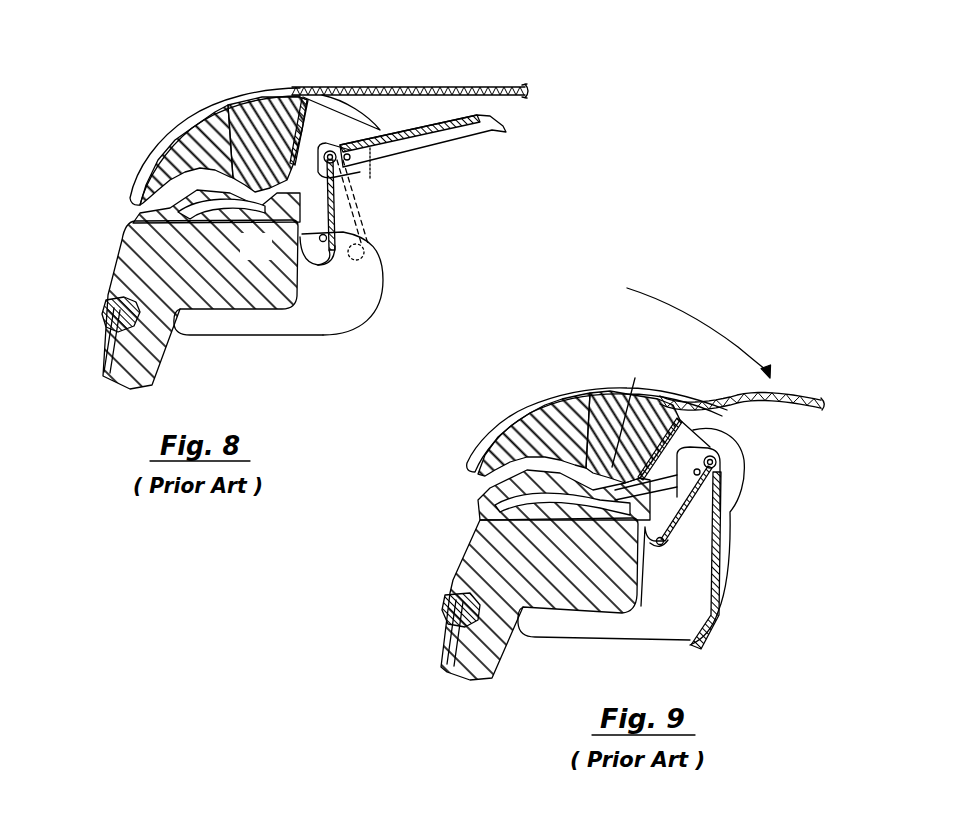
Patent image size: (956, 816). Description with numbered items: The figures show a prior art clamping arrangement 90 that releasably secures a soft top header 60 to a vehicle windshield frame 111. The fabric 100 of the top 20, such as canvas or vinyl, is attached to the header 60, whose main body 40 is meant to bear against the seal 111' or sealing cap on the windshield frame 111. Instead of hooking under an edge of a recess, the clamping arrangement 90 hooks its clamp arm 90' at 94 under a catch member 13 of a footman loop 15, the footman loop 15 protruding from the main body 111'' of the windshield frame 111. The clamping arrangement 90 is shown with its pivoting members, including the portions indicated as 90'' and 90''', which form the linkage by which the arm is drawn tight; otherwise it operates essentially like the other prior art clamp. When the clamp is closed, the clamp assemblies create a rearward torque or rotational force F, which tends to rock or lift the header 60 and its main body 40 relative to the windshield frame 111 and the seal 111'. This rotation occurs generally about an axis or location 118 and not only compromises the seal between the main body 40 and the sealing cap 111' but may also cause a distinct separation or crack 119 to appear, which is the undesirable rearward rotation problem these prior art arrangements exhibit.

In FIG. 8, the catch member 13 is at (313, 237).
In FIG. 8, the footman loop 15 is at (322, 274).
In FIG. 8, the top 20 is at (509, 77).
In FIG. 9, the top 20 is at (804, 393).
In FIG. 8, the main body 40 is at (257, 133).
In FIG. 9, the main body 40 is at (590, 420).
In FIG. 8, the soft top header 60 is at (225, 128).
In FIG. 9, the soft top header 60 is at (567, 425).
In FIG. 8, the clamping arrangement 90 is at (389, 172).
In FIG. 9, the clamping arrangement 90 is at (761, 536).
In FIG. 8, the clamp arm 90' is at (341, 77).
In FIG. 9, the clamp arm 90' is at (706, 460).
In FIG. 8, the hinge link rod 90'' is at (373, 212).
In FIG. 9, the hinge link rod 90'' is at (722, 506).
In FIG. 8, the hinge arm 90''' is at (456, 147).
In FIG. 9, the hinge arm 90''' is at (746, 560).
In FIG. 8, the hook location 94 is at (370, 257).
In FIG. 8, the fabric 100 is at (452, 87).
In FIG. 9, the fabric 100 is at (686, 400).
In FIG. 8, the windshield frame 111 is at (177, 274).
In FIG. 9, the windshield frame 111 is at (520, 599).
In FIG. 8, the seal 111' is at (195, 154).
In FIG. 9, the seal 111' is at (522, 504).
In FIG. 8, the main body 111'' is at (248, 327).
In FIG. 9, the axis 118 is at (648, 411).
In FIG. 9, the separation 119 is at (470, 487).
In FIG. 9, the rearward rotational force F is at (714, 312).